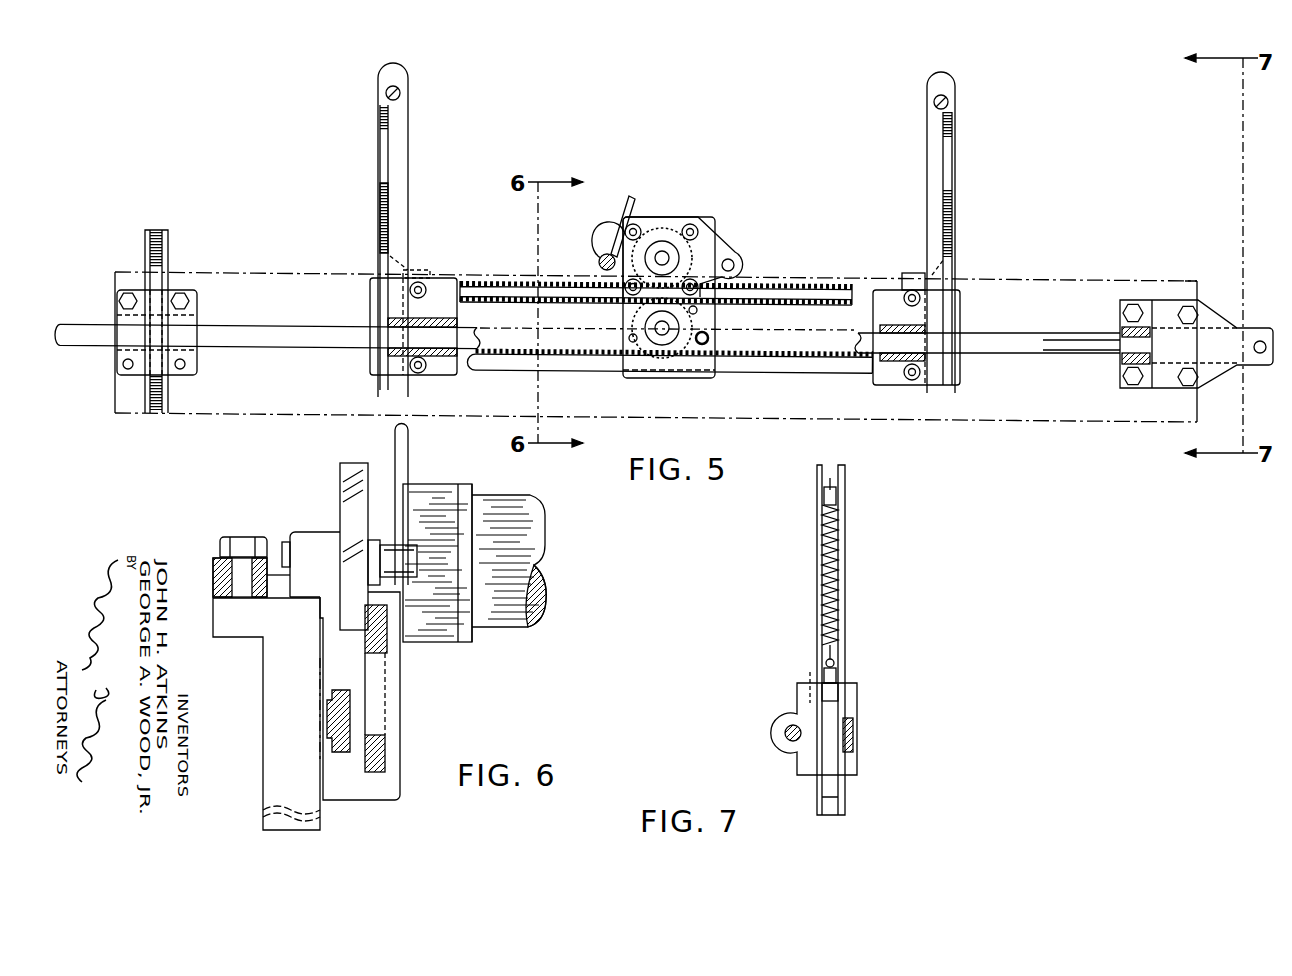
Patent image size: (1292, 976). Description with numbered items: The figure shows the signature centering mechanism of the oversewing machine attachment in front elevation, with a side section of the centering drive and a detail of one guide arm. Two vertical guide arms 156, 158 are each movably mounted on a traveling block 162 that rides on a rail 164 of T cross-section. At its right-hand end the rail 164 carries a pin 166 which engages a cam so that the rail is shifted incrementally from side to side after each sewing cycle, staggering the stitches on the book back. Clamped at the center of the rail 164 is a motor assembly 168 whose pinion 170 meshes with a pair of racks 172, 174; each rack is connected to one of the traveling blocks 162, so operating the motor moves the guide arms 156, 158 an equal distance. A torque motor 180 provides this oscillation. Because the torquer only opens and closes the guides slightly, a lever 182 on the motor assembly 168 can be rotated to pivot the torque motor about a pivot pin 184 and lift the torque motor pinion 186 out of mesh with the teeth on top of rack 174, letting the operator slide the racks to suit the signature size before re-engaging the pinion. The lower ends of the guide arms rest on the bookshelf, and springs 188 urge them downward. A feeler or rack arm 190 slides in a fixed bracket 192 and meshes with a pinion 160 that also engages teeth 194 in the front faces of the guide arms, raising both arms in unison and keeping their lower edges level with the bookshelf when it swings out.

In FIG. 5, the guide arm 156 is at (381, 139).
In FIG. 5, the guide arm 158 is at (952, 146).
In FIG. 7, the guide arm 158 is at (846, 546).
In FIG. 5, the pinion 160 is at (1043, 343).
In FIG. 7, the pinion 160 is at (786, 737).
In FIG. 5, the traveling block 162 is at (372, 368).
In FIG. 5, the rail 164 is at (1250, 332).
In FIG. 6, the rail 164 is at (349, 714).
In FIG. 7, the rail 164 is at (855, 740).
In FIG. 5, the pin 166 is at (1260, 353).
In FIG. 5, the motor assembly 168 is at (691, 285).
In FIG. 5, the pinion 170 is at (661, 350).
In FIG. 5, the rack 172 is at (552, 370).
In FIG. 5, the rack 174 is at (497, 300).
In FIG. 6, the torque motor 180 is at (466, 485).
In FIG. 5, the lever 182 is at (628, 204).
In FIG. 6, the lever 182 is at (409, 455).
In FIG. 5, the pivot pin 184 is at (735, 266).
In FIG. 5, the torque motor pinion 186 is at (700, 252).
In FIG. 7, the spring 188 is at (837, 597).
In FIG. 5, the feeler arm 190 is at (170, 247).
In FIG. 5, the fixed bracket 192 is at (126, 297).
In FIG. 5, the teeth 194 is at (380, 203).